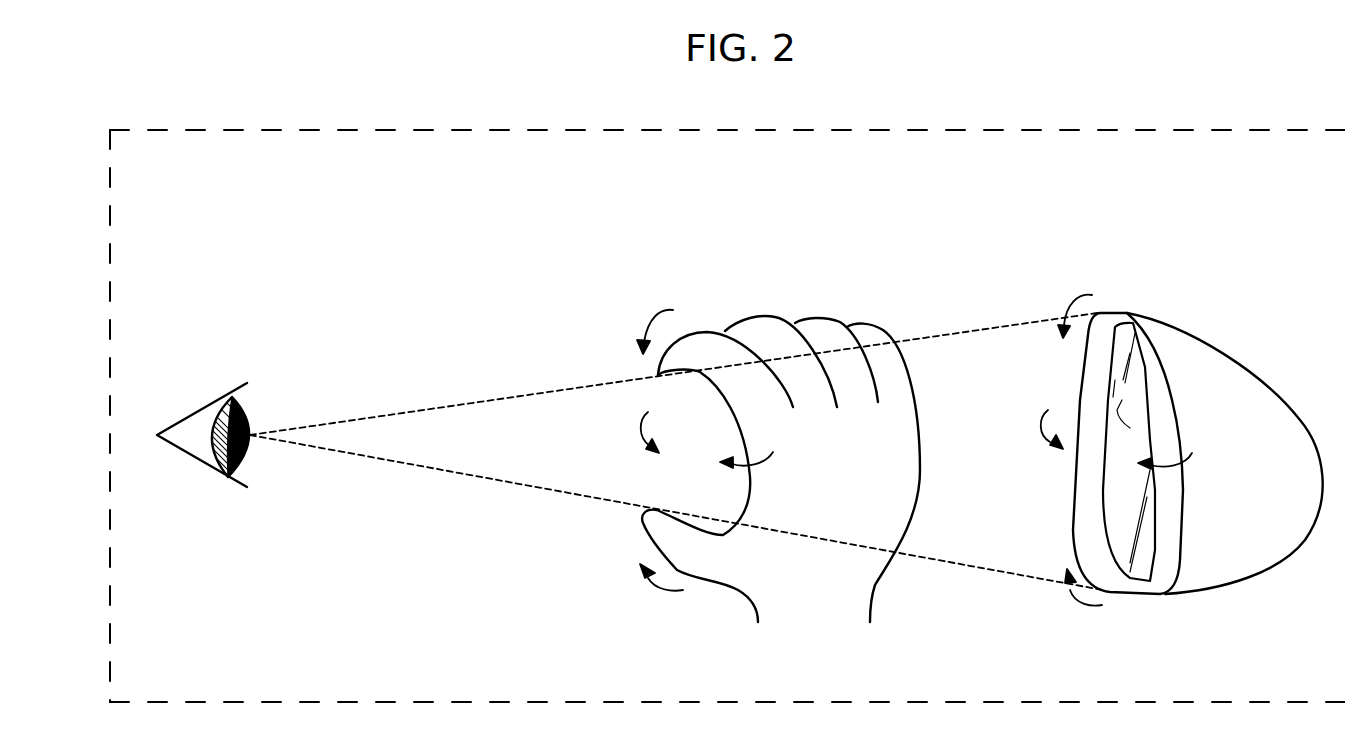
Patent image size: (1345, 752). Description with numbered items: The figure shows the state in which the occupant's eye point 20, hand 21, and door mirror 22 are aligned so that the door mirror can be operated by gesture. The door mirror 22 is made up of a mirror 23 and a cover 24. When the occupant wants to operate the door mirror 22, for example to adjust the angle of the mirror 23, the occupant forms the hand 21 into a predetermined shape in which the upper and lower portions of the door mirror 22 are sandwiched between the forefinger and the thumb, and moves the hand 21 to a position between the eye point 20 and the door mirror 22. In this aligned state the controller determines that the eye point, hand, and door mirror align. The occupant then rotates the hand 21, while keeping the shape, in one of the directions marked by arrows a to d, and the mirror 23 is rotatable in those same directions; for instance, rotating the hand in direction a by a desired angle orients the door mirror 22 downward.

The eye point 20 is at (207, 402).
The hand 21 is at (776, 326).
The door mirror 22 is at (1172, 400).
The mirror 23 is at (1110, 440).
The cover 24 is at (1223, 367).